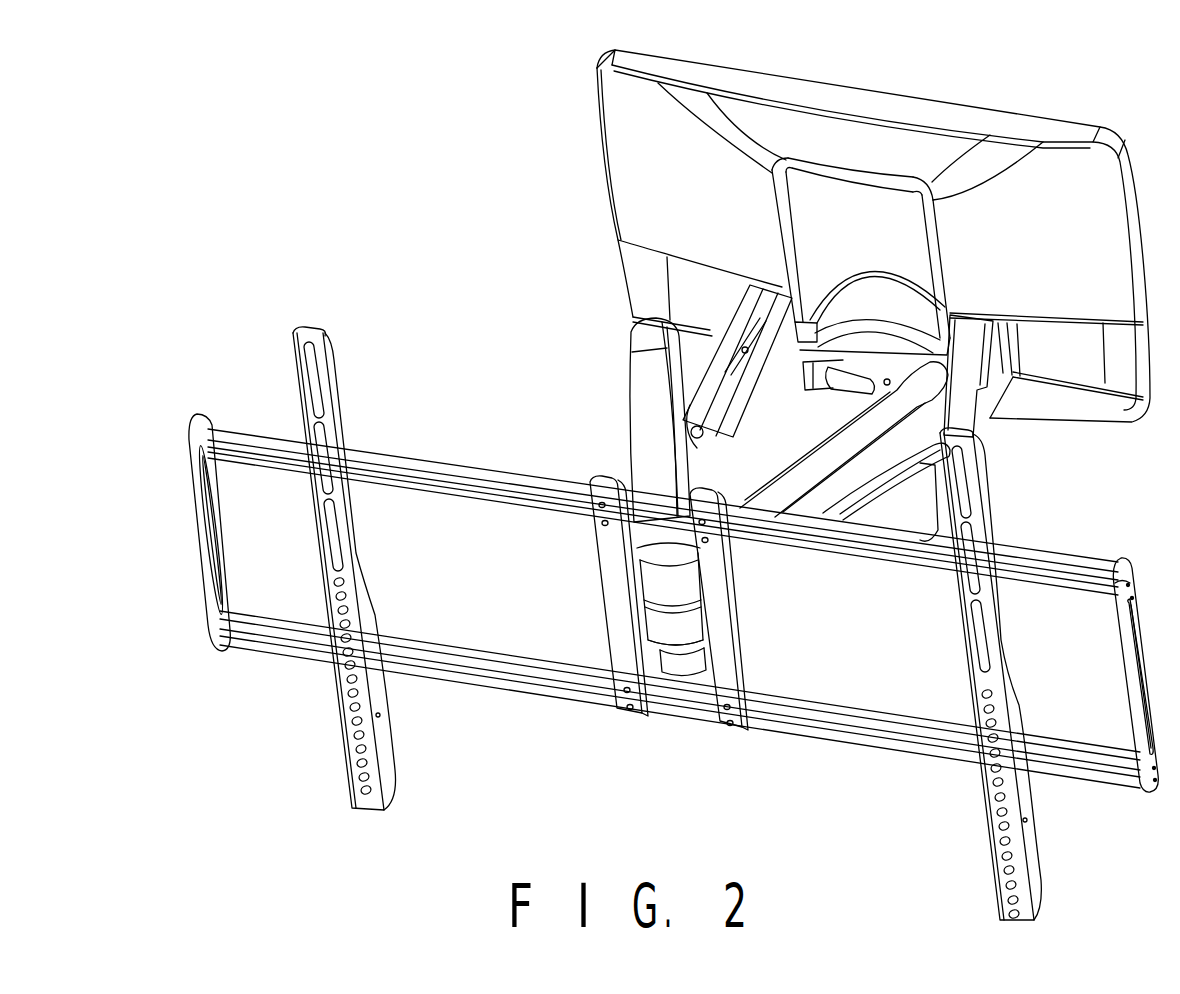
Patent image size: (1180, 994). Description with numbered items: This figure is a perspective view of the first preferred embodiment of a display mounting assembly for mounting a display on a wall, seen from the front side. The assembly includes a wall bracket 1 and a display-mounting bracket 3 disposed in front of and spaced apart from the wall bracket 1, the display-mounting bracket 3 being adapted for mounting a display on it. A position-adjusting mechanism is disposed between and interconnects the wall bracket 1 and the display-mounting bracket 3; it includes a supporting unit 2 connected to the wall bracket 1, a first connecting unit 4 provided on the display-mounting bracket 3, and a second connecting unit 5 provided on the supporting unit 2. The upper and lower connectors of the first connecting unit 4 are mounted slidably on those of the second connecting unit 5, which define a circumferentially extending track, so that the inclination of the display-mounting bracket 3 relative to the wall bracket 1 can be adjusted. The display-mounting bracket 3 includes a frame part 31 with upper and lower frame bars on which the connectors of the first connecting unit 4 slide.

The wall bracket 1 is at (524, 166).
The supporting unit 2 is at (600, 377).
The display-mounting bracket 3 is at (318, 694).
The frame part 31 is at (432, 652).
The first connecting unit 4 is at (574, 568).
The second connecting unit 5 is at (681, 525).